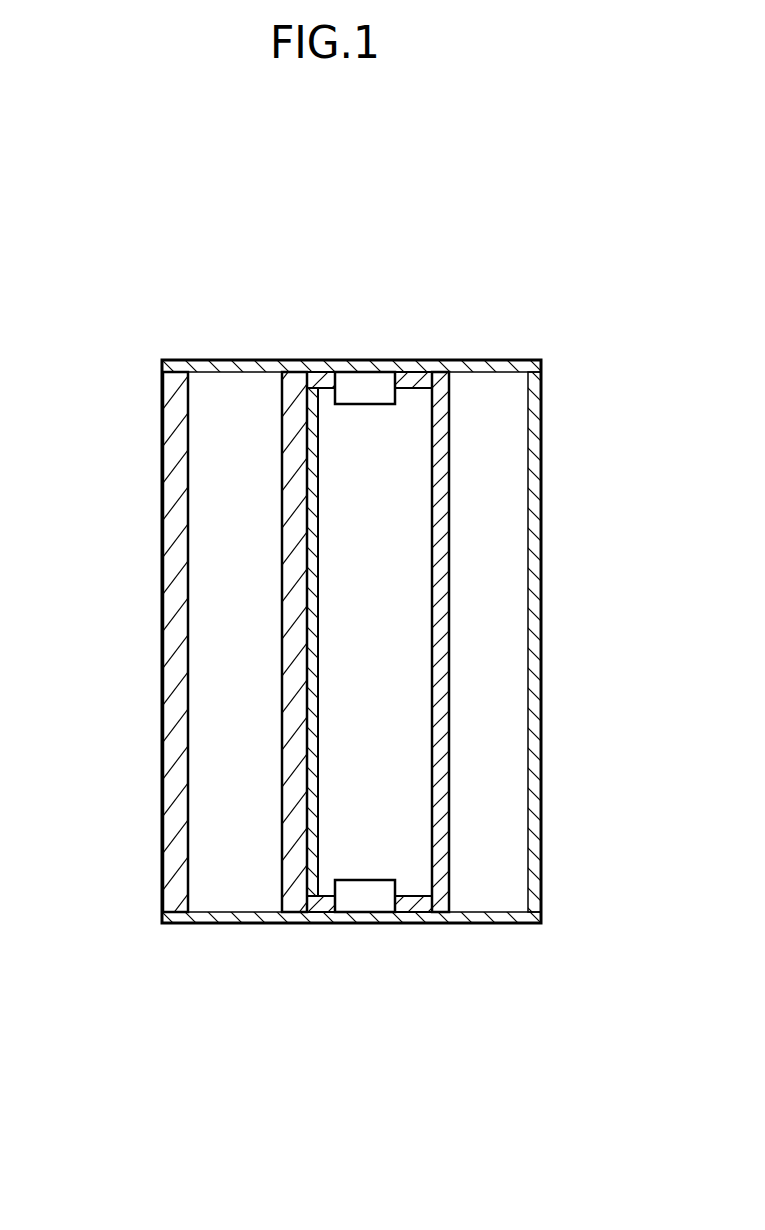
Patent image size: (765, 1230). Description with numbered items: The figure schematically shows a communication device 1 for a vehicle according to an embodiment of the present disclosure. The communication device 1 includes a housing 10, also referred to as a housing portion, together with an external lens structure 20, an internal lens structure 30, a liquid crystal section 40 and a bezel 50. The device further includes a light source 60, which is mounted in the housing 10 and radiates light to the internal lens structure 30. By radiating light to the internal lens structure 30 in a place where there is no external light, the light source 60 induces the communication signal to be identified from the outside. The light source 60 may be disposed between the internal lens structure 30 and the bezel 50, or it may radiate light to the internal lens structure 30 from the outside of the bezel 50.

The communication device 1 is at (578, 213).
The housing 10 is at (205, 918).
The external lens structure 20 is at (178, 728).
The internal lens structure 30 is at (293, 413).
The liquid crystal section 40 is at (314, 552).
The bezel 50 is at (438, 776).
The light source 60 is at (365, 904).